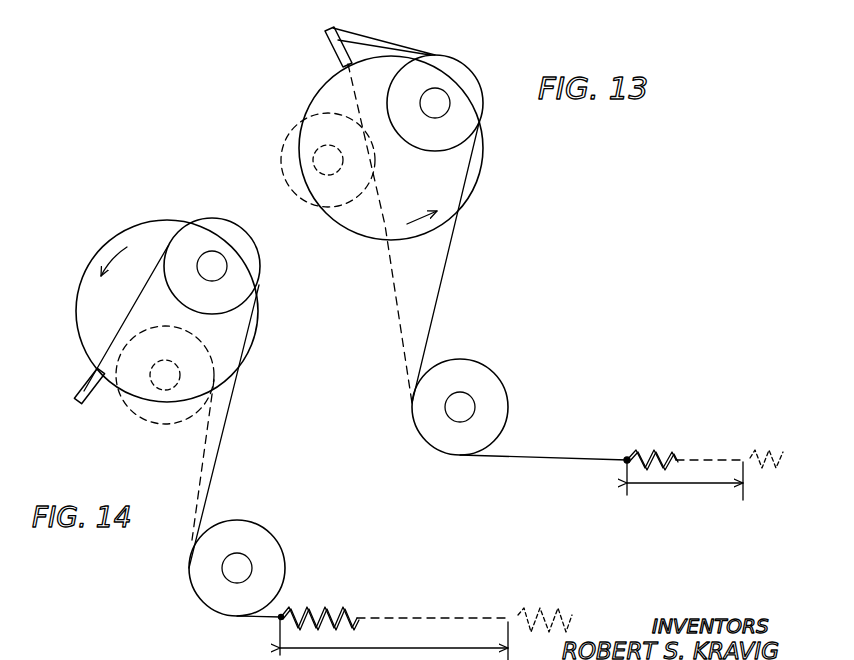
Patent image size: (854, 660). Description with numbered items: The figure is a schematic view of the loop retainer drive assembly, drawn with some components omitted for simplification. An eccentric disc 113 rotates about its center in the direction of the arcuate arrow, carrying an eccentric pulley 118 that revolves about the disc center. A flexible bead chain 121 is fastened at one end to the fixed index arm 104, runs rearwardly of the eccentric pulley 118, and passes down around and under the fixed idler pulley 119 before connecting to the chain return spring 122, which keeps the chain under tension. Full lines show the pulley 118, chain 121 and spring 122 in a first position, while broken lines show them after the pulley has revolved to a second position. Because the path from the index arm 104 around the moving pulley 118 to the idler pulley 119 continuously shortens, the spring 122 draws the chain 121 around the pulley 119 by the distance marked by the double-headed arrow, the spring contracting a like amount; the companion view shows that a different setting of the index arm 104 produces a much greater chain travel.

In FIG. 13, the index arm 104 is at (334, 51).
In FIG. 14, the index arm 104 is at (82, 390).
In FIG. 13, the eccentric disc 113 is at (325, 94).
In FIG. 14, the eccentric disc 113 is at (140, 235).
In FIG. 13, the eccentric pulley 118 is at (457, 73).
In FIG. 14, the eccentric pulley 118 is at (247, 257).
In FIG. 13, the idler pulley 119 is at (480, 375).
In FIG. 14, the idler pulley 119 is at (258, 535).
In FIG. 13, the flexible bead chain 121 is at (398, 305).
In FIG. 14, the flexible bead chain 121 is at (217, 445).
In FIG. 13, the chain return spring 122 is at (753, 452).
In FIG. 14, the chain return spring 122 is at (522, 613).